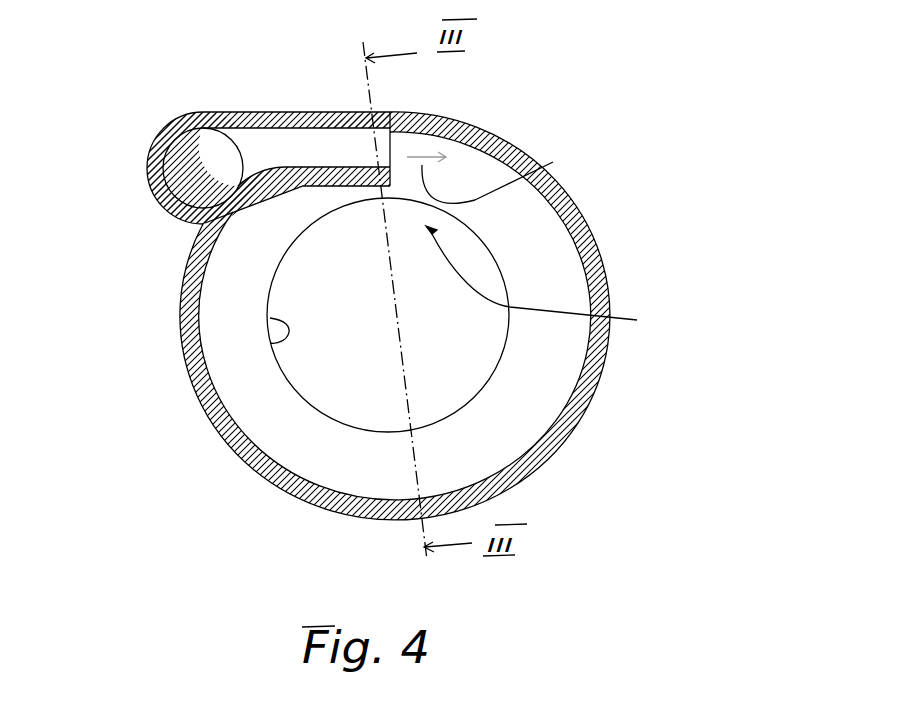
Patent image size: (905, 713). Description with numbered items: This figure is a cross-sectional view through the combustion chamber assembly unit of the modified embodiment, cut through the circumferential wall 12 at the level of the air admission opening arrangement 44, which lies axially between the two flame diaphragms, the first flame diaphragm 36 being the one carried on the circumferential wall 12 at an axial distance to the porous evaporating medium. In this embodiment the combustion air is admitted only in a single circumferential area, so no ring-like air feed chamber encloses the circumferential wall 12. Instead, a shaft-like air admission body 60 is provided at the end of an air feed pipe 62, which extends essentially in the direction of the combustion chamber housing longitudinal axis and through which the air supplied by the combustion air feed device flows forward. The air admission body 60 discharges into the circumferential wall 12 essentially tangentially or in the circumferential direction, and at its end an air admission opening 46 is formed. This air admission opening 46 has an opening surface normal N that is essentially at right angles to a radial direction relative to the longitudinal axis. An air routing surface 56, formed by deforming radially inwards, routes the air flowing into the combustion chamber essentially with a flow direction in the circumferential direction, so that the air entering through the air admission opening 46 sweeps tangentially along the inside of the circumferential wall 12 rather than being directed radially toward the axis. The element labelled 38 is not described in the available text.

The circumferential wall 12 is at (320, 306).
The first flame diaphragm 36 is at (227, 299).
The rotor 38 is at (273, 350).
The air admission opening arrangement 44 is at (569, 301).
The air admission opening 46 is at (393, 149).
The air routing surface 56 is at (330, 167).
The air admission body 60 is at (318, 112).
The air feed pipe 62 is at (147, 163).
The opening surface normal N is at (527, 162).